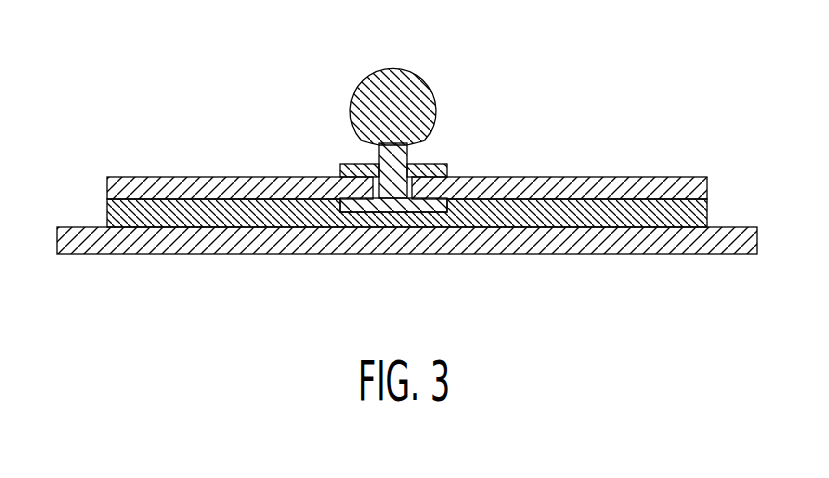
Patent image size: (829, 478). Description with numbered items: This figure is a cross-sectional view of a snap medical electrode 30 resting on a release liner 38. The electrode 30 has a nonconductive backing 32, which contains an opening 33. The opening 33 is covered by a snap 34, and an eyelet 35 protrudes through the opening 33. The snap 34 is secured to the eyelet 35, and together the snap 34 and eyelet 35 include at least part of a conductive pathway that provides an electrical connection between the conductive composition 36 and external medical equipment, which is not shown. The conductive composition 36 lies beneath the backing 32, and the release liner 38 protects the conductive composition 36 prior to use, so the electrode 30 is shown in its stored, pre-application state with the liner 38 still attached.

The snap medical electrode 30 is at (670, 130).
The nonconductive backing 32 is at (570, 177).
The opening 33 is at (378, 160).
The snap 34 is at (407, 112).
The eyelet 35 is at (407, 148).
The conductive composition 36 is at (107, 210).
The release liner 38 is at (57, 242).